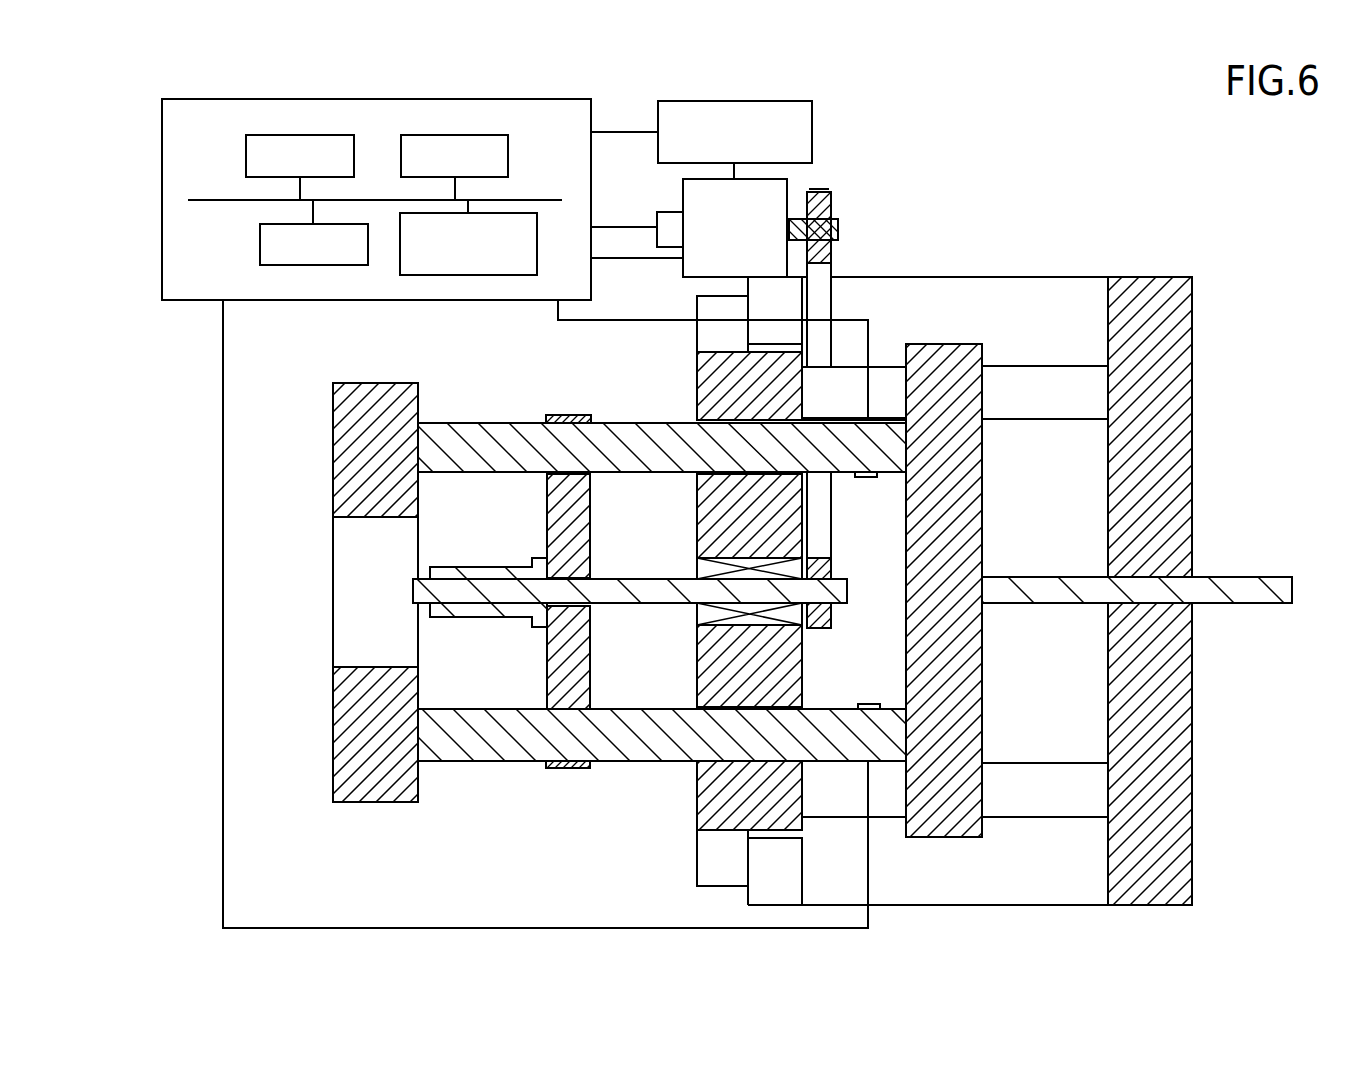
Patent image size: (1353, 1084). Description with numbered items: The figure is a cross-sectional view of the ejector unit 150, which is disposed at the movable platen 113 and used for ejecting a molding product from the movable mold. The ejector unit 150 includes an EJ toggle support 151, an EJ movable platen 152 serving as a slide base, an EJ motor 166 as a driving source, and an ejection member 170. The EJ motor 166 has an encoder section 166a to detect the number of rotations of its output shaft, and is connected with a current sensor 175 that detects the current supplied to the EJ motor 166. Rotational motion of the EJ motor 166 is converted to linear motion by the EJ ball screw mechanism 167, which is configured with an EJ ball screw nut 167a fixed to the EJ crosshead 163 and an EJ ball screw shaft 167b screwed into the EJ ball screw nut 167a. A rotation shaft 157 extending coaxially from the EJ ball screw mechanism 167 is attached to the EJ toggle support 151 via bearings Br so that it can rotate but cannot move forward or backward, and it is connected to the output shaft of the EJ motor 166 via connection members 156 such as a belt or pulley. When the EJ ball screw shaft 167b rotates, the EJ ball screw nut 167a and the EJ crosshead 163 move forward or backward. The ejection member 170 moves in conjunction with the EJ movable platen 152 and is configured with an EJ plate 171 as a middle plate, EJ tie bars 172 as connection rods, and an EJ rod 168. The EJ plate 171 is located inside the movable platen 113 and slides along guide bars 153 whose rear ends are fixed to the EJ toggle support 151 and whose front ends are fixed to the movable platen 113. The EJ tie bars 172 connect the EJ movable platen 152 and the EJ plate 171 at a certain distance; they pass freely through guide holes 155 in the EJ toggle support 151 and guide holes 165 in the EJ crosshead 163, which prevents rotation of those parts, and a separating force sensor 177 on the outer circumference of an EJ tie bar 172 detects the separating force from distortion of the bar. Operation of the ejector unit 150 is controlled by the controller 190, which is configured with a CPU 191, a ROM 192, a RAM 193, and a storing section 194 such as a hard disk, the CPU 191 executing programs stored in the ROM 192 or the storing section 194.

The controller 190 is at (473, 513).
The CPU 191 is at (310, 134).
The ROM 192 is at (463, 134).
The RAM 193 is at (295, 267).
The storing section 194 is at (400, 268).
The current sensor 175 is at (740, 101).
The EJ motor 166 is at (702, 239).
The encoder section 166a is at (672, 217).
The movable platen 113 is at (942, 287).
The connection members 156 is at (834, 303).
The EJ tie bars 172 is at (847, 462).
The separating force sensor 177 is at (870, 478).
The EJ plate 171 is at (945, 828).
The guide bars 153 is at (1046, 377).
The EJ rod 168 is at (1045, 586).
The ejection member 170 is at (1040, 541).
The ejector unit 150 is at (619, 606).
The EJ movable platen 152 is at (372, 794).
The EJ toggle support 151 is at (708, 380).
The bearings Br is at (722, 557).
The guide holes 155 is at (720, 421).
The guide holes 165 is at (565, 415).
The EJ crosshead 163 is at (556, 678).
The EJ ball screw mechanism 167 is at (486, 550).
The EJ ball screw nut 167a is at (457, 576).
The EJ ball screw shaft 167b is at (503, 595).
The rotation shaft 157 is at (642, 579).